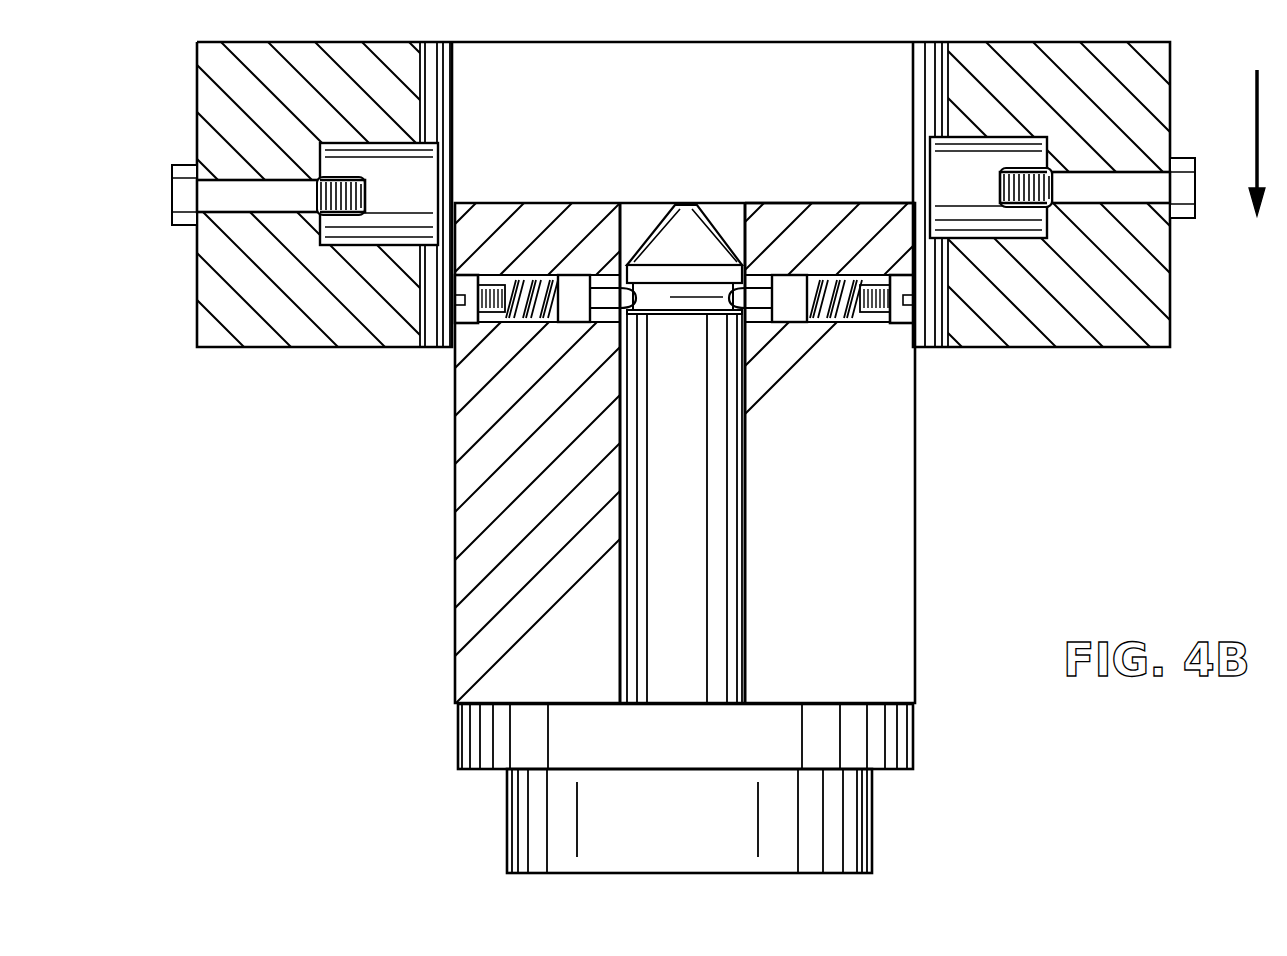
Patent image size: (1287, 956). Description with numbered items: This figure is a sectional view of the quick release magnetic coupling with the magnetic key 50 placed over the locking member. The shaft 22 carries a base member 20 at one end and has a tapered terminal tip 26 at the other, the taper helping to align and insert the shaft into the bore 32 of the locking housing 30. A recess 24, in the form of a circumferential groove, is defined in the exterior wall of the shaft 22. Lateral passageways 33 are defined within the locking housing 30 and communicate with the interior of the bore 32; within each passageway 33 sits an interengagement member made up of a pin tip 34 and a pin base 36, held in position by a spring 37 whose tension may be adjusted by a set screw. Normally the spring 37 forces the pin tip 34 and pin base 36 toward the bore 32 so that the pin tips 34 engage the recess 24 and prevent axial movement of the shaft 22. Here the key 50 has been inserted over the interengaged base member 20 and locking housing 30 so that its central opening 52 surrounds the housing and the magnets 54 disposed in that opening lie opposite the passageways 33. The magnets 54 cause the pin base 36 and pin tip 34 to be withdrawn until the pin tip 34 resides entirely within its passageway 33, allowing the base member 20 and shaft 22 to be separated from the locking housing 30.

The base member 20 is at (916, 738).
The shaft 22 is at (750, 560).
The recess 24 is at (642, 295).
The terminal tip 26 is at (673, 230).
The locking housing 30 is at (916, 645).
The bore 32 is at (742, 210).
The lateral passageway 33 is at (770, 258).
The pin tip 34 is at (762, 300).
The pin base 36 is at (758, 280).
The spring 37 is at (837, 320).
The magnetic key 50 is at (1170, 98).
The central opening 52 is at (912, 68).
The magnet 54 is at (972, 162).